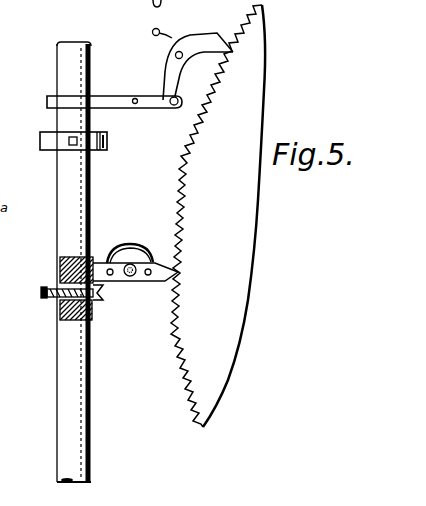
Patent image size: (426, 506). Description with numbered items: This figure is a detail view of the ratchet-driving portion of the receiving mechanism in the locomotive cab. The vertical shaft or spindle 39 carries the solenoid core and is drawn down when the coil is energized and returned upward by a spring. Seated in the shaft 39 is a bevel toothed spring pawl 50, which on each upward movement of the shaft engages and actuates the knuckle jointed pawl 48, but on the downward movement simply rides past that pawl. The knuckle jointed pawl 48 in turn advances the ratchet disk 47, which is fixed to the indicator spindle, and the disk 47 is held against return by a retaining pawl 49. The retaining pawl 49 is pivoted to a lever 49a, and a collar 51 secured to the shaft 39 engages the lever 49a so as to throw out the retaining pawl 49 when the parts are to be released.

The shaft or spindle 39 is at (60, 200).
The ratchet disk 47 is at (218, 216).
The knuckle jointed pawl 48 is at (143, 275).
The retaining pawl 49 is at (204, 42).
The lever 49a is at (115, 102).
The bevel toothed spring pawl 50 is at (96, 292).
The collar 51 is at (47, 139).